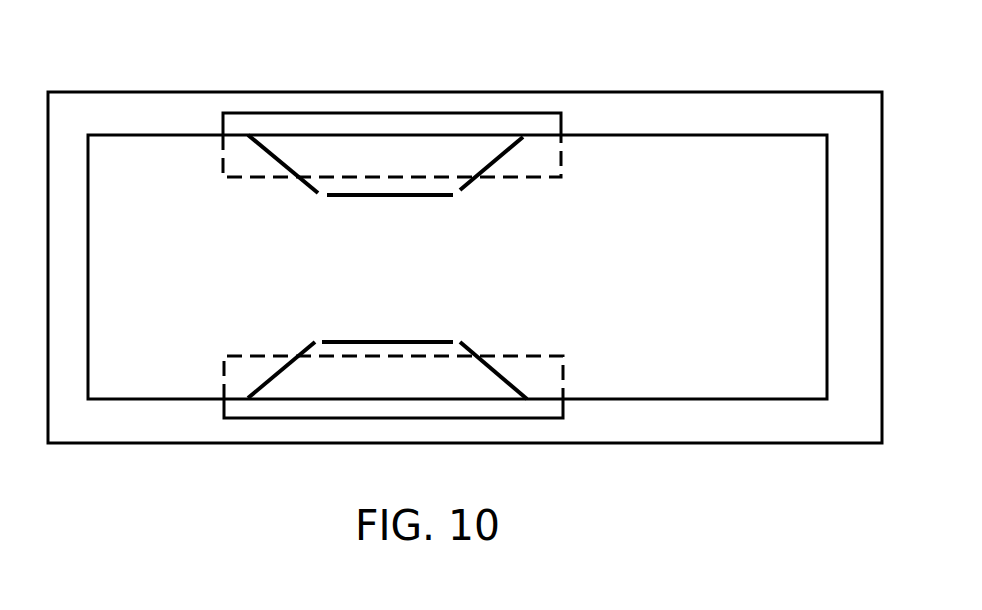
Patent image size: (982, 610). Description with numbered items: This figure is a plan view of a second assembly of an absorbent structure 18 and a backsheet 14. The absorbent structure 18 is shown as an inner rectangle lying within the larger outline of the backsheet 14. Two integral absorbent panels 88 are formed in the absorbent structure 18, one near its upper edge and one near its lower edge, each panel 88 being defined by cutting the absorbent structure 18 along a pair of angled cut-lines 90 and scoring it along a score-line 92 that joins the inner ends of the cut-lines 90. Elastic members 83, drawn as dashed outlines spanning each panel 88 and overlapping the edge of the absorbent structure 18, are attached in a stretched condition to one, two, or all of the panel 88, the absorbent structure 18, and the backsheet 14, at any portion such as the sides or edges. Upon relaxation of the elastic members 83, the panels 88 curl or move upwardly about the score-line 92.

The backsheet 14 is at (610, 92).
The absorbent structure 18 is at (733, 157).
The elastic members 83 is at (252, 120).
The integral absorbent panels 88 is at (460, 160).
The cut-lines 90 is at (278, 165).
The score-line 92 is at (407, 197).